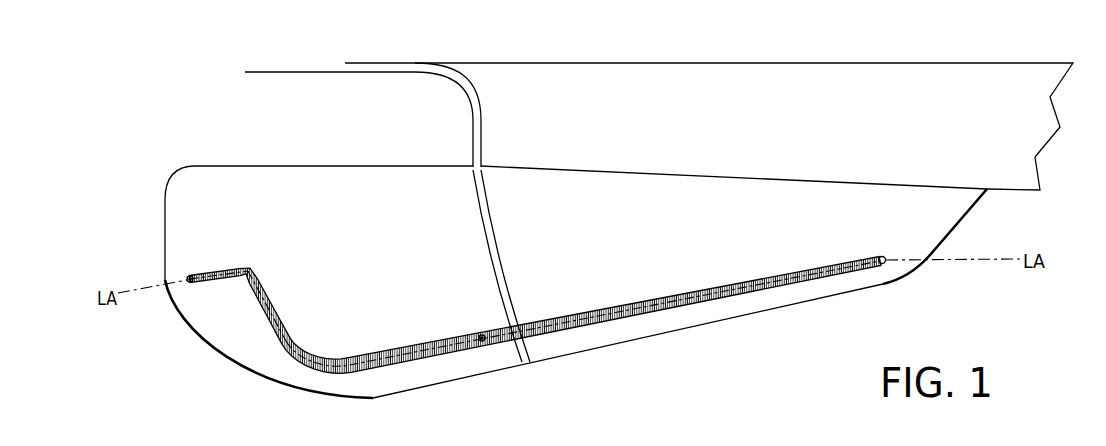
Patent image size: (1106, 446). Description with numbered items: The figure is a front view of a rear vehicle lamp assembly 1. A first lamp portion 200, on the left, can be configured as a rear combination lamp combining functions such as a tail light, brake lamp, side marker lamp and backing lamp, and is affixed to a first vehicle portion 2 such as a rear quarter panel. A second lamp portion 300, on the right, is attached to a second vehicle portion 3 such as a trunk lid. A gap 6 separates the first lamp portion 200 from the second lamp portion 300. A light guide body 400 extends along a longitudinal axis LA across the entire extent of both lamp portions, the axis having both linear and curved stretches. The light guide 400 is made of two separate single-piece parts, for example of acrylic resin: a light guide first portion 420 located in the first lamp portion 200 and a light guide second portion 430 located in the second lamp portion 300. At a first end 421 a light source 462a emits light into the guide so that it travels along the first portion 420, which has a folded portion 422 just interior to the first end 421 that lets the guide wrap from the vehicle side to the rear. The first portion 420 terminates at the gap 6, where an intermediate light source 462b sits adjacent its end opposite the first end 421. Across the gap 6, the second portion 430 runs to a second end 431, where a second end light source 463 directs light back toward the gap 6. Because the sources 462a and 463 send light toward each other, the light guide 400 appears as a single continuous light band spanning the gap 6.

The vehicle lamp assembly 1 is at (158, 129).
The first vehicle portion 2 is at (310, 92).
The second vehicle portion 3 is at (745, 92).
The first lamp portion 200 is at (353, 166).
The second lamp portion 300 is at (805, 180).
The light guide body 400 is at (511, 326).
The light guide first portion 420 is at (332, 364).
The first end 421 is at (204, 274).
The folded portion 422 is at (243, 282).
The light guide second portion 430 is at (613, 316).
The second end 431 is at (840, 258).
The light source 462a is at (188, 283).
The intermediate light source 462b is at (484, 341).
The second end light source 463 is at (887, 268).
The gap 6 is at (527, 362).